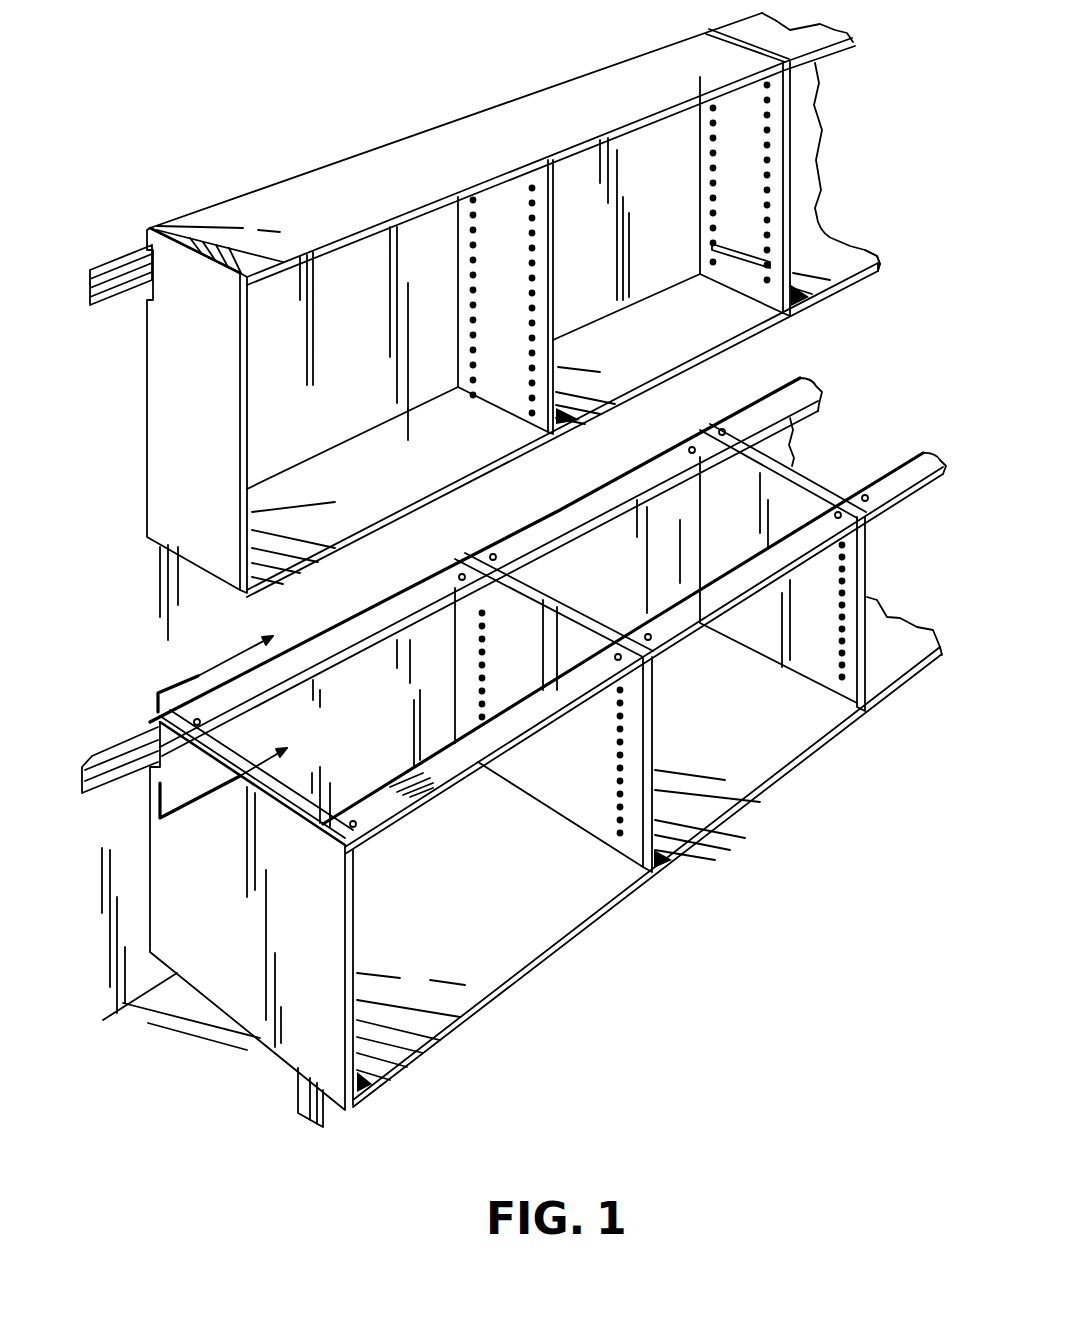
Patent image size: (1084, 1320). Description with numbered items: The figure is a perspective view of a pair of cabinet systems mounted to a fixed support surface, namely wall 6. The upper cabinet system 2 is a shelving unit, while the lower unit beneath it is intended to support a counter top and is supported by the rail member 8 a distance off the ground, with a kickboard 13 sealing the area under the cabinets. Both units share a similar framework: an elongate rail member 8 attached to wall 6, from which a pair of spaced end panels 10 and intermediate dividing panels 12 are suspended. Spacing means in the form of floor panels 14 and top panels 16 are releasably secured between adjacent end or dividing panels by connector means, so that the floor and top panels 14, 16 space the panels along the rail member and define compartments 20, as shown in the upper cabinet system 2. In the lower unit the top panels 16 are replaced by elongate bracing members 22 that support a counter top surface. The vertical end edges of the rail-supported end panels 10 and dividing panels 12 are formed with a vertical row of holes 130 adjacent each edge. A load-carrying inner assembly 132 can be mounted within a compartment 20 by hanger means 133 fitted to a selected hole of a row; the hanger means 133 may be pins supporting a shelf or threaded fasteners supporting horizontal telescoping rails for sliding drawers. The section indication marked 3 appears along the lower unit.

The cabinet system 2 is at (523, 91).
The wall 6 is at (146, 628).
The rail member 8 is at (88, 284).
The end panel 10 is at (194, 407).
The dividing panel 12 is at (516, 284).
The kickboard 13 is at (300, 1093).
The floor panel 14 is at (412, 465).
The top panel 16 is at (366, 199).
The compartment 20 is at (369, 342).
The bracing member 22 is at (637, 478).
The holes 130 is at (527, 373).
The load-carrying inner assembly 132 is at (736, 263).
The hanger means 133 is at (876, 264).
The section line 3- 3 is at (233, 711).